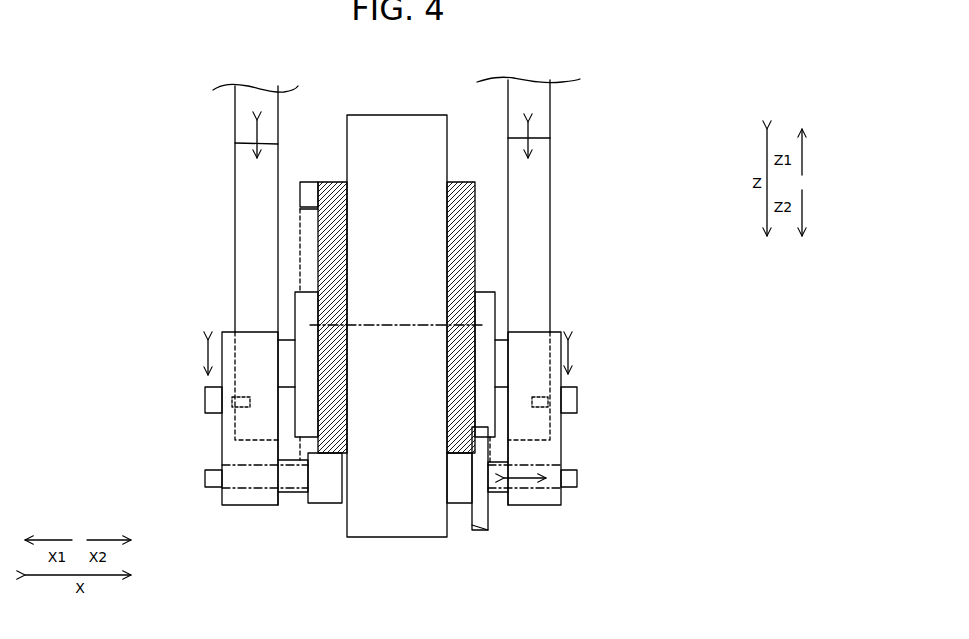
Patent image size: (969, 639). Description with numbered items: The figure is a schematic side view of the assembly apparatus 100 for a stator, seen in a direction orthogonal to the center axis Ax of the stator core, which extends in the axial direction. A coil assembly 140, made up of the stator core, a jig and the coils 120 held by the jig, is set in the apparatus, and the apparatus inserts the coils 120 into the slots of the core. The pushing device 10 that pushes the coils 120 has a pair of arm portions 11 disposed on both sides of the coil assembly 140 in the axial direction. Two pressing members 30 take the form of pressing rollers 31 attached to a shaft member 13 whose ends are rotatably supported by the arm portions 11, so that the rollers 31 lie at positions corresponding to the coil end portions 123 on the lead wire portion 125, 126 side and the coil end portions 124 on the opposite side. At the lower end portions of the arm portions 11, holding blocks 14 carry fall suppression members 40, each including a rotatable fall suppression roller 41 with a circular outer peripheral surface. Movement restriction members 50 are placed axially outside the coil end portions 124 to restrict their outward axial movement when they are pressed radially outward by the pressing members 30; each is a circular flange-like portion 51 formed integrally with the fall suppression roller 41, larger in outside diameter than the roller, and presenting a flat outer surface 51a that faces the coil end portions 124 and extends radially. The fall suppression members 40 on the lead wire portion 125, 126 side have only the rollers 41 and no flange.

The assembly apparatus 100 is at (630, 121).
The pushing device 10 is at (558, 107).
The arm portions 11 is at (252, 144).
The coil assembly 140 is at (323, 128).
The coils 120 is at (382, 317).
The coil end portions 123 is at (296, 238).
The coil end portions 124 is at (477, 236).
The lead wire portion 126 is at (300, 182).
The lead wire portion 125 is at (300, 208).
The pressing members 30 is at (378, 356).
The pressing rollers 31 is at (296, 291).
The shaft member 13 is at (278, 333).
The holding blocks 14 is at (222, 332).
The fall suppression members 40 is at (368, 526).
The fall suppression roller 41 is at (325, 505).
The movement restriction members 50 is at (579, 494).
The flange-like portion 51 is at (490, 519).
The flat outer surface 51a is at (465, 525).
The center axis Ax is at (408, 325).